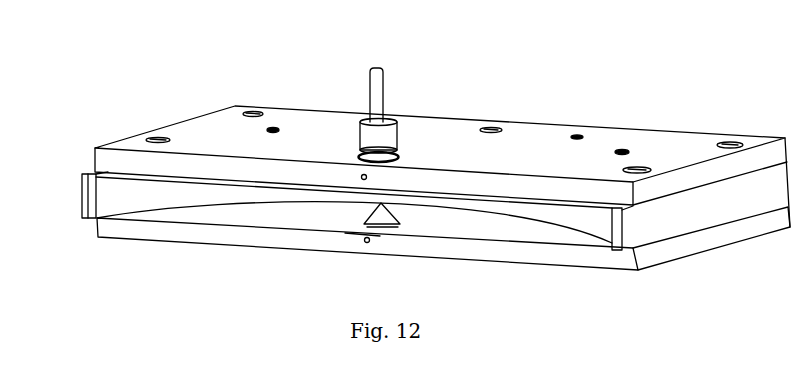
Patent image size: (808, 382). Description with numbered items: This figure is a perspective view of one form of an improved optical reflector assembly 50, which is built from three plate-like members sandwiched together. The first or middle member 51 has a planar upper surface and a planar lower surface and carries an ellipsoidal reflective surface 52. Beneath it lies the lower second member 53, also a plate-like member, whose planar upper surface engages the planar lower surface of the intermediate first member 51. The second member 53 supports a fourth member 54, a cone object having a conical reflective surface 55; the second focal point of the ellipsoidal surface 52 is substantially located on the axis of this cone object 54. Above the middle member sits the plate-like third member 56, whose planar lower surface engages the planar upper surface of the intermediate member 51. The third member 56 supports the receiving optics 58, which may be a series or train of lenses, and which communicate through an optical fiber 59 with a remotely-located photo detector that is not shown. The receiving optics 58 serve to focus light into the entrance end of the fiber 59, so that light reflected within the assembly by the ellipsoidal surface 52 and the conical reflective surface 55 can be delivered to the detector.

The improved optical reflector assembly 50 is at (568, 104).
The first or middle member 51 is at (80, 191).
The ellipsoidal reflective surface 52 is at (197, 194).
The lower second member 53 is at (91, 229).
The fourth member 54 is at (354, 230).
The conical reflective surface 55 is at (401, 212).
The plate-like third member 56 is at (90, 146).
The receiving optics 58 is at (401, 126).
The optical fiber 59 is at (365, 67).